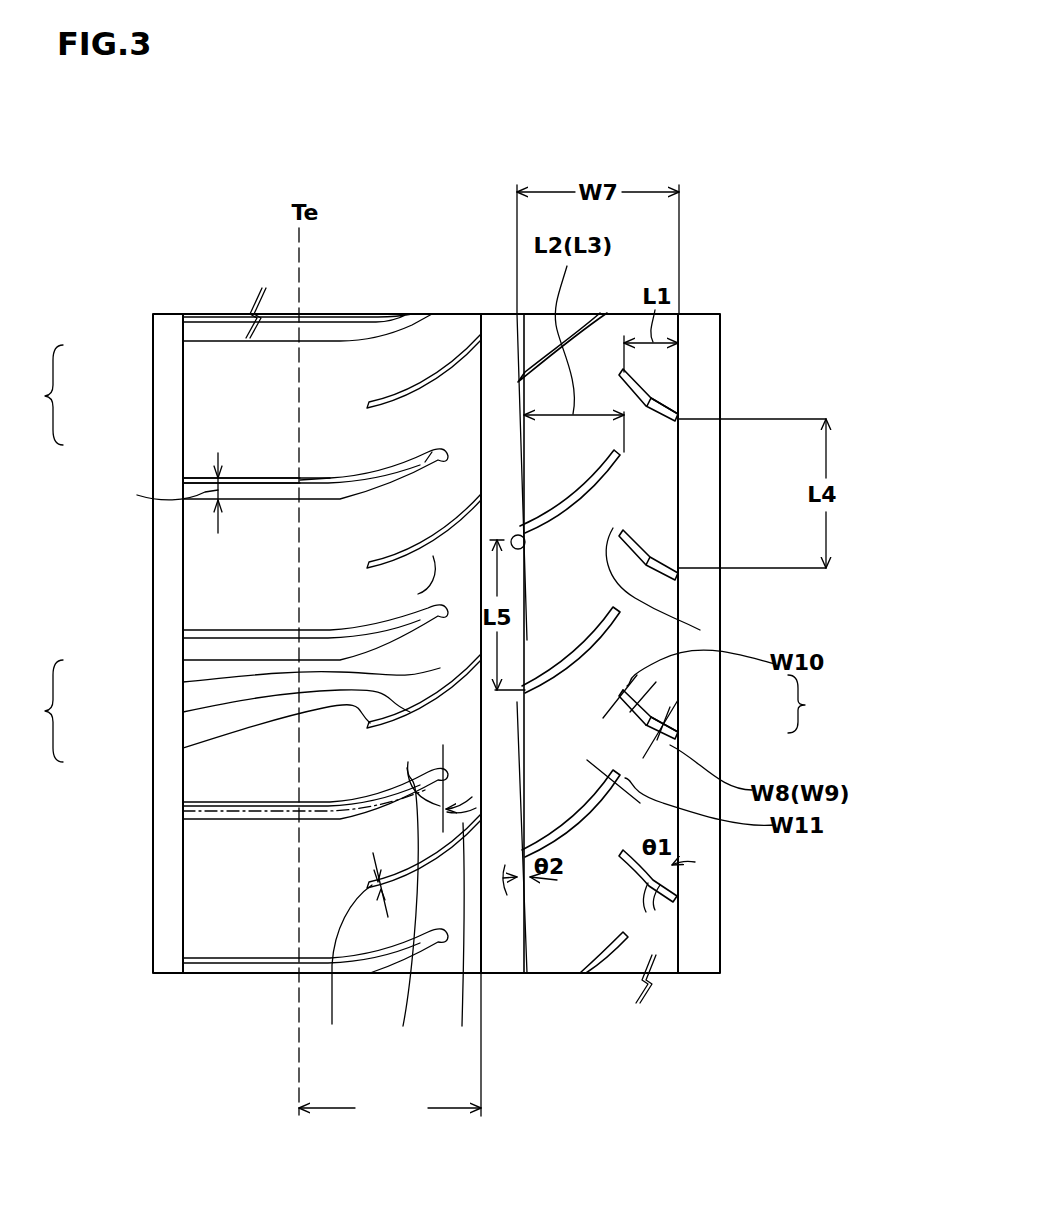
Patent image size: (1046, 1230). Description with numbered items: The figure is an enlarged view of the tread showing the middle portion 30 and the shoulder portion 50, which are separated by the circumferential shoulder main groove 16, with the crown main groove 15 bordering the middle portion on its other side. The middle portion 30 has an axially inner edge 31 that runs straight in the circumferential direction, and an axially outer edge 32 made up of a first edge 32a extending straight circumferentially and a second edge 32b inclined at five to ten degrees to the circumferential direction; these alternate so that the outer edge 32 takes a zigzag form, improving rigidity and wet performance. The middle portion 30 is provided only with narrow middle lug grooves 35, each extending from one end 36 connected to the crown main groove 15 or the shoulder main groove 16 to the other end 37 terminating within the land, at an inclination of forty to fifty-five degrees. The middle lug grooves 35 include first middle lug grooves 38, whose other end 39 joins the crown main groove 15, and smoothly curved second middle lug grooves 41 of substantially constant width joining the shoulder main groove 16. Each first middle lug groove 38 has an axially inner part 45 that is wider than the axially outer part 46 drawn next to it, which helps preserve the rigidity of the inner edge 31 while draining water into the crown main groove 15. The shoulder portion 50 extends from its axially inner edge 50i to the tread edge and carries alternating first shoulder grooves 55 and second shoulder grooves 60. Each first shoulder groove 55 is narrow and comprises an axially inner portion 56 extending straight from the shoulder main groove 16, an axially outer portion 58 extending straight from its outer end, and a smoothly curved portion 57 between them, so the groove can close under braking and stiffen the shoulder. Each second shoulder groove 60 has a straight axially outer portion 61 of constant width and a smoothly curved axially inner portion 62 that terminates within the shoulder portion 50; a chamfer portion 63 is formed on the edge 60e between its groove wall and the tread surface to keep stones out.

The crown main groove 15 is at (713, 345).
The shoulder main groove 16 is at (503, 333).
The middle portion 30 is at (693, 644).
The axially inner edge 31 is at (679, 355).
The axially outer edge 32 is at (561, 706).
The first edge 32a is at (520, 826).
The second edge 32b is at (523, 920).
The middle lug groove 35 is at (693, 684).
The one end 36 is at (694, 578).
The other end 37 is at (700, 630).
The first middle lug groove 38 is at (747, 690).
The other end 39 is at (678, 416).
The second middle lug groove 41 is at (607, 485).
The axially inner part 45 is at (660, 727).
The second groove portion 46 is at (628, 693).
The shoulder portion 50 is at (253, 677).
The axially inner edge 50i is at (487, 332).
The first shoulder groove 55 is at (250, 603).
The axially inner portion 56 is at (183, 682).
The smoothly curved portion 57 is at (183, 712).
The axially outer portion 58 is at (183, 748).
The second shoulder groove 60 is at (226, 574).
The edge 60e is at (340, 490).
The axially outer portion 61 is at (272, 490).
The axially inner portion 62 is at (410, 477).
The chamfer portion 63 is at (327, 483).